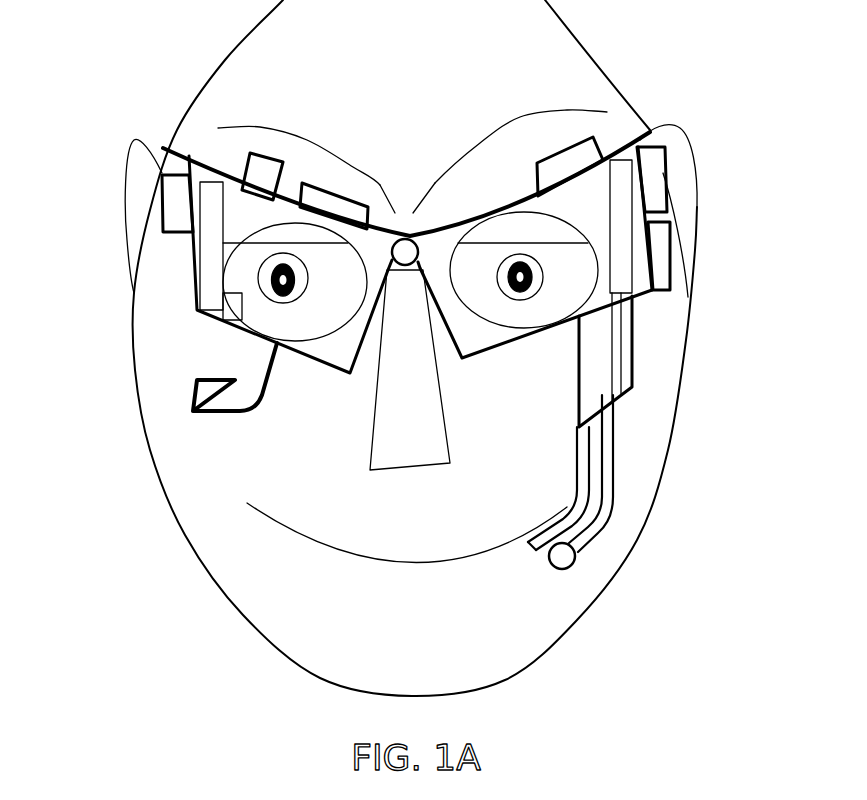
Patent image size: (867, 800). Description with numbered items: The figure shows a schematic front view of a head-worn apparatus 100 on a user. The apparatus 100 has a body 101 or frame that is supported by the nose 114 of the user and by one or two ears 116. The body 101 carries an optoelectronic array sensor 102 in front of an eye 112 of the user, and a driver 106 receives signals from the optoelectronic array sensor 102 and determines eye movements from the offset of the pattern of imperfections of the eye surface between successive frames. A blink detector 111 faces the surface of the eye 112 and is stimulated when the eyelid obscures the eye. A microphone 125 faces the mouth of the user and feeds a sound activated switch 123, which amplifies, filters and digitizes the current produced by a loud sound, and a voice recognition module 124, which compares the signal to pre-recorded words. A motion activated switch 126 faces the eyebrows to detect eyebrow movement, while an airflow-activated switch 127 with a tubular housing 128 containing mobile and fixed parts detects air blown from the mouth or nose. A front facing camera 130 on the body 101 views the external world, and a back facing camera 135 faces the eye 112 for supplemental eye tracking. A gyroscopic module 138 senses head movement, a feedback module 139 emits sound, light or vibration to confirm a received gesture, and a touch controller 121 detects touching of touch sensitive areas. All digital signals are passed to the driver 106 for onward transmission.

The head-worn apparatus 100 is at (656, 124).
The body 101 is at (403, 213).
The optoelectronic array sensor 102 is at (195, 255).
The driver 106 is at (162, 212).
The blink detector 111 is at (230, 312).
The eye 112 is at (275, 323).
The nose 114 is at (378, 417).
The ear 116 is at (665, 200).
The touch controller 121 is at (670, 267).
The sound activated switch 123 is at (623, 395).
The voice recognition module 124 is at (620, 343).
The microphone 125 is at (548, 567).
The motion activated switch 126 is at (268, 156).
The airflow-activated switch 127 is at (590, 382).
The tubular housing 128 is at (580, 460).
The front facing camera 130 is at (420, 246).
The back facing camera 135 is at (193, 412).
The gyroscopic module 138 is at (567, 150).
The feedback module 139 is at (338, 192).